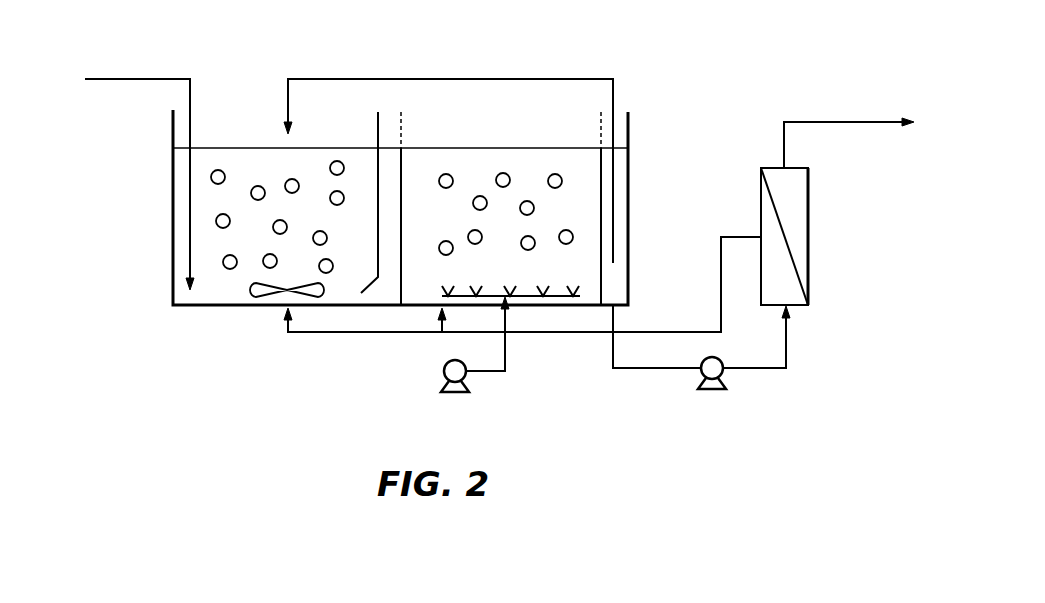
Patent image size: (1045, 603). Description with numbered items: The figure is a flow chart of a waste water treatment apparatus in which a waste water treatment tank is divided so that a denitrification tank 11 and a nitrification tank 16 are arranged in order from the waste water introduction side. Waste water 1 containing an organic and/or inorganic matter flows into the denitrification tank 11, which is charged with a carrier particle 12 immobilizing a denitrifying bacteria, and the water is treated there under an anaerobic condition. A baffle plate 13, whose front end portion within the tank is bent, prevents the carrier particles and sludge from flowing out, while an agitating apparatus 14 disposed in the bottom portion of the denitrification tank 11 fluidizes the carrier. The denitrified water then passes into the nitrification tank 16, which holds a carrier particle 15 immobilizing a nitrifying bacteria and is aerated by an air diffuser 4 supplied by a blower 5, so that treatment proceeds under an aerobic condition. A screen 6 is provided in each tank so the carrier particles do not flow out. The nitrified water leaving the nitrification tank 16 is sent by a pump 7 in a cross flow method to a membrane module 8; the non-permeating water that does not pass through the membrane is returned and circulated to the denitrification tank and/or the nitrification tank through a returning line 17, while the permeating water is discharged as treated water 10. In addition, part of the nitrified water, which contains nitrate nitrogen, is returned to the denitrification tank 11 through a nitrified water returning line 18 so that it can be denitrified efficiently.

The waste water 1 is at (129, 78).
The air diffuser 4 is at (554, 297).
The blower 5 is at (444, 371).
The screen 6 is at (402, 134).
The pump 7 is at (725, 377).
The membrane module 8 is at (798, 238).
The treated water 10 is at (869, 122).
The denitrification tank 11 is at (222, 157).
The carrier particle 12 is at (336, 161).
The baffle plate 13 is at (378, 113).
The agitating apparatus 14 is at (254, 298).
The carrier particle 15 is at (447, 174).
The nitrification tank 16 is at (535, 165).
The returning line 17 is at (675, 332).
The nitrified water returning line 18 is at (493, 78).